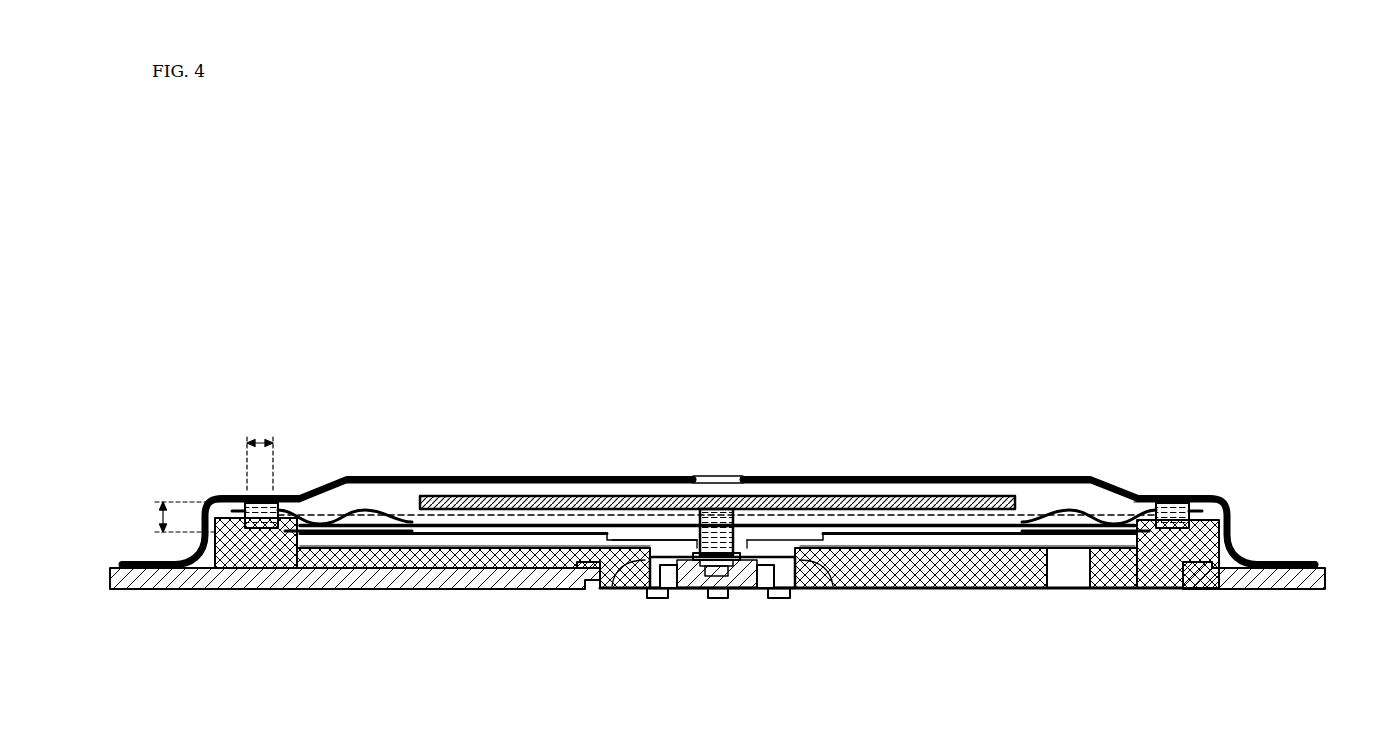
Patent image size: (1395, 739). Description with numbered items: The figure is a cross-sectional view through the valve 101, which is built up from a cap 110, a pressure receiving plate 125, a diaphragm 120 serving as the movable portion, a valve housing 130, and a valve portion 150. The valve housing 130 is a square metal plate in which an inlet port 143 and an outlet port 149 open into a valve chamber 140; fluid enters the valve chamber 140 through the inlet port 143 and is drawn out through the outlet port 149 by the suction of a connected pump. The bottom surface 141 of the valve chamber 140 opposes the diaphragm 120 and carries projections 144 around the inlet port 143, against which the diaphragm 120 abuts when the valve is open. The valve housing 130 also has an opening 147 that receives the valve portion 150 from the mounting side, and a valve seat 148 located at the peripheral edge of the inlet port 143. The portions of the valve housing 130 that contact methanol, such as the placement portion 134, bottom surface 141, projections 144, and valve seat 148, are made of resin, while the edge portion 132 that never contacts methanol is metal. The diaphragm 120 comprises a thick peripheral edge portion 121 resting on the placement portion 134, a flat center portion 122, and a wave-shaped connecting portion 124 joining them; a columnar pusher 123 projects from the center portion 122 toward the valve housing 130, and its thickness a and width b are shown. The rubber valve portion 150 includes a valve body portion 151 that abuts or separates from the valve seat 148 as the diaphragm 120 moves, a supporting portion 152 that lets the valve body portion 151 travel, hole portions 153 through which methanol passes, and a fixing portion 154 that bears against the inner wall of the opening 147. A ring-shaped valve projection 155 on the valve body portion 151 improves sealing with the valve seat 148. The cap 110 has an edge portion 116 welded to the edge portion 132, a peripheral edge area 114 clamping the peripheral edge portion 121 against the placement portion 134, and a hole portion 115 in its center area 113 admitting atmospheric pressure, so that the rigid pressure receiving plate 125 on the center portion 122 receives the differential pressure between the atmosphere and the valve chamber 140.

The valve 101 is at (1232, 490).
The cap 110 is at (1037, 468).
The center area 113 is at (403, 477).
The peripheral edge area 114 is at (237, 497).
The hole portion 115 is at (744, 480).
The edge portion 116 is at (138, 562).
The diaphragm 120 is at (971, 503).
The peripheral edge portion 121 is at (216, 496).
The center portion 122 is at (826, 497).
The pusher 123 is at (716, 535).
The connecting portion 124 is at (345, 513).
The pressure receiving plate 125 is at (905, 513).
The valve housing 130 is at (324, 566).
The edge portion 132 is at (196, 590).
The placement portion 134 is at (262, 542).
The valve chamber 140 is at (495, 537).
The bottom surface 141 is at (395, 550).
The inlet port 143 is at (750, 546).
The projections 144 is at (647, 545).
The opening 147 is at (620, 573).
The valve seat 148 is at (670, 557).
The outlet port 149 is at (1067, 570).
The valve portion 150 is at (641, 588).
The valve body portion 151 is at (712, 582).
The supporting portion 152 is at (694, 578).
The hole portions 153 is at (765, 580).
The fixing portion 154 is at (782, 590).
The valve projection 155 is at (690, 552).